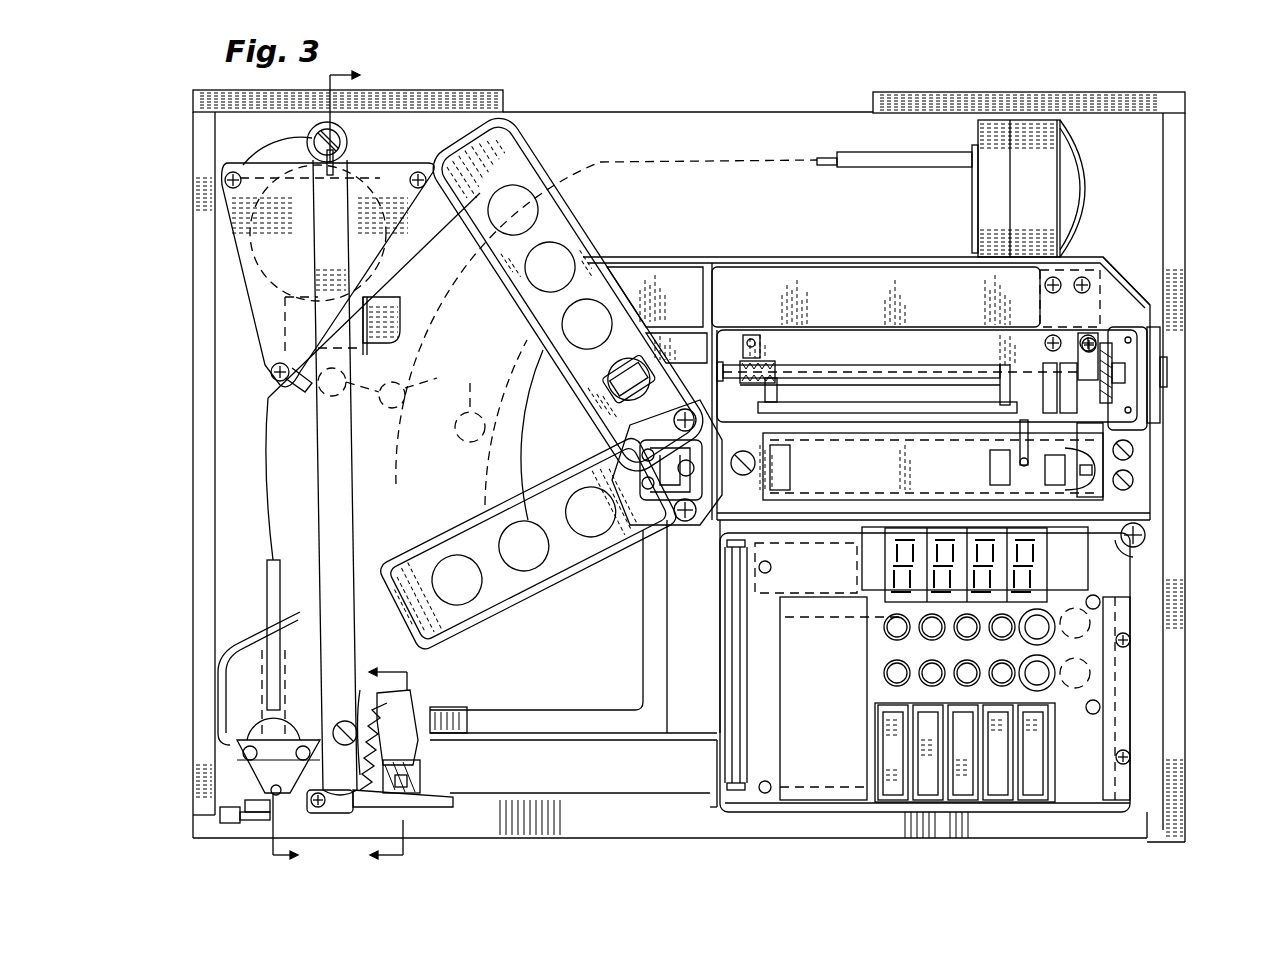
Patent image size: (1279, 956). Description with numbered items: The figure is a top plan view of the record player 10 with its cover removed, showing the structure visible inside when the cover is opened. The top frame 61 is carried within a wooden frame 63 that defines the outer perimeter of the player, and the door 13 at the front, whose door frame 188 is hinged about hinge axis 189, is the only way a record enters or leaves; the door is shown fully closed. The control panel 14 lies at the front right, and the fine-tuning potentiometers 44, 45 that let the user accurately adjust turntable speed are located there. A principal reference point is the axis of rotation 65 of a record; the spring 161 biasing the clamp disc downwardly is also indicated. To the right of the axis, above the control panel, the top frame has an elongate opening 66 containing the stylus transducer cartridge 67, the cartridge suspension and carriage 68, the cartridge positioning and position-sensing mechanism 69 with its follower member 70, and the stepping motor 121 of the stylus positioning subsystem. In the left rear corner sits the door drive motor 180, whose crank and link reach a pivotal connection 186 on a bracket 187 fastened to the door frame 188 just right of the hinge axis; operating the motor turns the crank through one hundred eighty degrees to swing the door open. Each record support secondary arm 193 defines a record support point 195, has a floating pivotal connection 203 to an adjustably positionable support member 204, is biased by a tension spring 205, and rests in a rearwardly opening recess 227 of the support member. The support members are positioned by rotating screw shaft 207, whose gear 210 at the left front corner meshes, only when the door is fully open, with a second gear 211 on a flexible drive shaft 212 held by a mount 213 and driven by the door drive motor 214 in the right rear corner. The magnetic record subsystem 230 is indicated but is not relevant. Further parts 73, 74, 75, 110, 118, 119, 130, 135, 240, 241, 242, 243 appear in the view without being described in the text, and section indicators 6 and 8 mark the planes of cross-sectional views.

The record player 10 is at (1238, 310).
The door 13 is at (825, 832).
The control panel 14 is at (1140, 540).
The fine-tuning potentiometer 44 is at (1092, 622).
The fine-tuning potentiometer 45 is at (1092, 673).
The top frame 61 is at (588, 236).
The wooden frame 63 is at (1170, 722).
The axis of rotation 65 is at (668, 418).
The elongate opening 66 is at (868, 360).
The stylus transducer cartridge 67 is at (1040, 485).
The cartridge suspension and carriage 68 is at (975, 453).
The cartridge positioning and position-sensing mechanism 69 is at (915, 365).
The follower member 70 is at (985, 389).
The guide channel 73 is at (832, 485).
The pivot screw 74 is at (750, 452).
The terminal block 75 is at (1140, 465).
The stop pin 110 is at (1015, 438).
The mounting bracket 118 is at (747, 360).
The toothed block 119 is at (1112, 358).
The stepping motor 121 is at (1160, 397).
The chamfered corner 130 is at (1126, 269).
The guide block 135 is at (760, 462).
The spring 161 is at (650, 548).
The door drive motor 180 is at (380, 472).
The pivotal connection 186 is at (350, 700).
The bracket 187 is at (343, 813).
The door frame 188 is at (598, 810).
The hinge axis 189 is at (270, 810).
The secondary arm 193 is at (400, 700).
The record support point 195 is at (401, 405).
The floating pivotal connection 203 is at (420, 772).
The support member 204 is at (420, 785).
The tension spring 205 is at (400, 740).
The screw shaft 207 is at (250, 812).
The gear 210 is at (220, 815).
The second gear 211 is at (270, 740).
The flexible drive shaft 212 is at (855, 152).
The mount 213 is at (215, 700).
The door drive motor 214 is at (1082, 180).
The recess 227 is at (400, 805).
The magnetic record subsystem 230 is at (608, 405).
The terminal strip 240 is at (820, 770).
The mounting screws 241 is at (1130, 640).
The slide 242 is at (735, 735).
The circuit board 243 is at (770, 712).
The section line 6- 6 is at (320, 467).
The section line 8- 8 is at (387, 764).